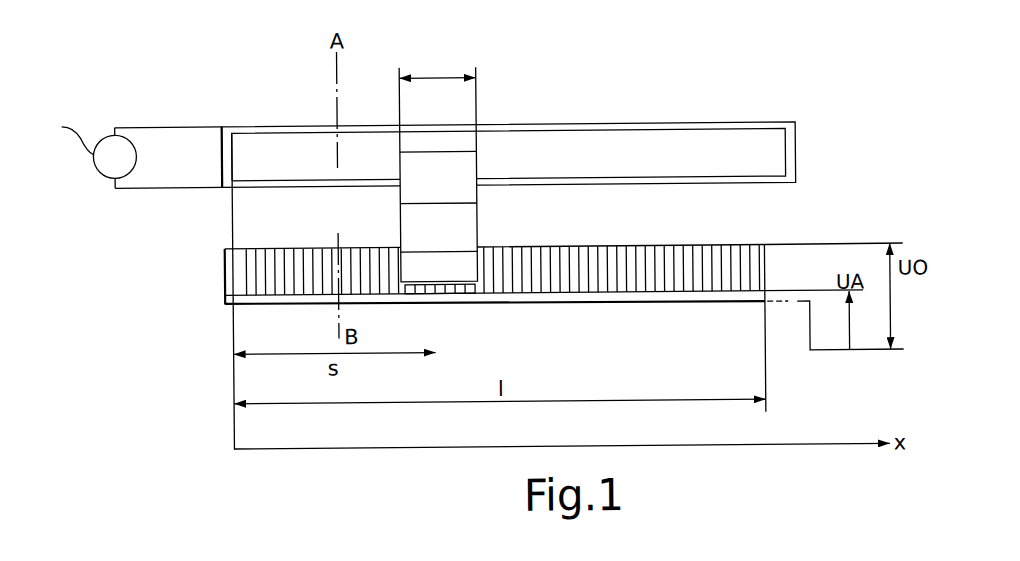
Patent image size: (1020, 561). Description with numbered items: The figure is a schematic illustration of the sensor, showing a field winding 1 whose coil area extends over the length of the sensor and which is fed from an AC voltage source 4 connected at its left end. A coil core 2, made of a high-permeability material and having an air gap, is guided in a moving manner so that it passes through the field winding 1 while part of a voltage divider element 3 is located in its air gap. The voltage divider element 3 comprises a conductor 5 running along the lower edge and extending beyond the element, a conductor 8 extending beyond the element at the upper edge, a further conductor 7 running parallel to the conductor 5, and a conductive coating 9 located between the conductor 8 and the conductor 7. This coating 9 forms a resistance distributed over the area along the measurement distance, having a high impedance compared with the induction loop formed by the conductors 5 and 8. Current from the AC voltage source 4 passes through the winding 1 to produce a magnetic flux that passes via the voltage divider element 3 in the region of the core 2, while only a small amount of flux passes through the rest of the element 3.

The field winding 1 is at (264, 123).
The coil core 2 is at (435, 371).
The voltage divider element 3 is at (503, 277).
The AC voltage source 4 is at (132, 149).
The conductor 5 is at (613, 306).
The further conductor 7 is at (662, 296).
The conductor 8 is at (665, 246).
The conductive coating 9 is at (700, 272).